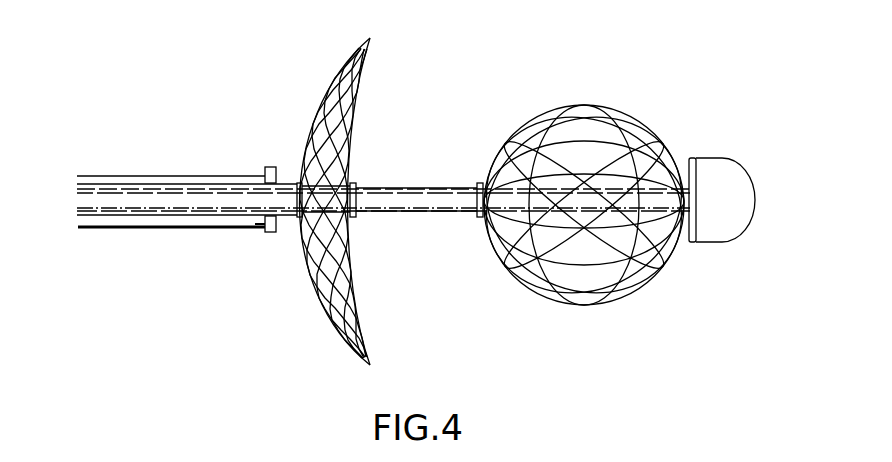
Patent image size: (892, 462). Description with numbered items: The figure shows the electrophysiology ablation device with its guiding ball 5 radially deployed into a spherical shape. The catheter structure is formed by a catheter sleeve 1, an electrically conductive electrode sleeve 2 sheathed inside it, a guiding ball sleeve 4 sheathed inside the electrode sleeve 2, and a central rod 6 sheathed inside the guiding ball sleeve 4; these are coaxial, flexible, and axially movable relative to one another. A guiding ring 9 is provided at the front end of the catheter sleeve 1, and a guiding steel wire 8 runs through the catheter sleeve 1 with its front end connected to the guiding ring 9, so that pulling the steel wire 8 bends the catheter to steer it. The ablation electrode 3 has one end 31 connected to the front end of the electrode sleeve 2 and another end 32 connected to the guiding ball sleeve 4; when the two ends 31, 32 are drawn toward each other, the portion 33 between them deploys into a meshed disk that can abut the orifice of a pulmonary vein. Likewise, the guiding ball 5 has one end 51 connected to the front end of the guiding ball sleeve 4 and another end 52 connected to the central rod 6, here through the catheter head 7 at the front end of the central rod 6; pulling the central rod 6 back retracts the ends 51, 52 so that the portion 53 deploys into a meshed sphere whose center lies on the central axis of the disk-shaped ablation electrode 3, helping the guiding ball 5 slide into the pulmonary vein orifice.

The catheter sleeve 1 is at (173, 176).
The electrically conductive electrode sleeve 2 is at (283, 180).
The ablation electrode 3 is at (347, 201).
The one end of the ablation electrode 31 is at (299, 186).
The another end of the ablation electrode 32 is at (357, 218).
The portion between the two ends of the ablation electrode 33 is at (343, 128).
The guiding ball sleeve 4 is at (400, 186).
The guiding ball 5 is at (582, 225).
The one end of the guiding ball 51 is at (480, 218).
The another end of the guiding ball 52 is at (690, 236).
The portion between the two ends of the guiding ball 53 is at (541, 162).
The central rod 6 is at (622, 192).
The catheter head 7 is at (740, 200).
The guiding steel wire 8 is at (187, 228).
The guiding ring 9 is at (268, 235).